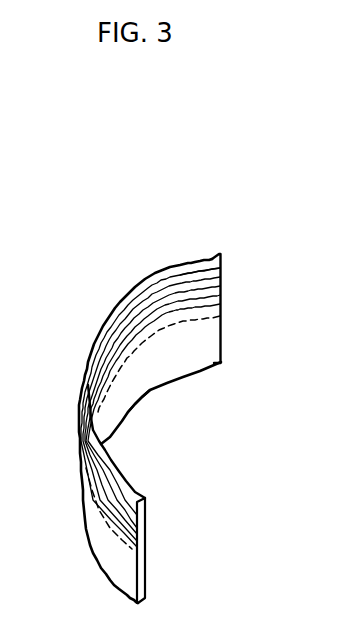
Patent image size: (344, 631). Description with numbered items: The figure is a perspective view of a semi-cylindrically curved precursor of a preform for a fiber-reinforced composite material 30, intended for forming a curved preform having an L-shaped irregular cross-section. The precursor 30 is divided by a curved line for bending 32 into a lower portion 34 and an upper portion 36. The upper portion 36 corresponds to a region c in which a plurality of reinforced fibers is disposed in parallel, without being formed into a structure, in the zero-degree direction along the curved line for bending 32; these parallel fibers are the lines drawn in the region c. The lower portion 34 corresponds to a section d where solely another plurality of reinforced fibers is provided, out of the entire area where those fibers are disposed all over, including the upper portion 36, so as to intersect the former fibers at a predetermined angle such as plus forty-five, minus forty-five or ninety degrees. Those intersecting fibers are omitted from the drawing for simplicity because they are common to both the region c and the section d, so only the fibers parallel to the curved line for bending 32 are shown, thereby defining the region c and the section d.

The semi-cylindrically curved precursor of a preform for a fiber-reinforced composit 30 is at (152, 260).
The curved line for bending 32 is at (160, 337).
The lower portion 34 is at (210, 342).
The upper portion 36 is at (137, 312).
The region c is at (200, 283).
The section d is at (123, 390).